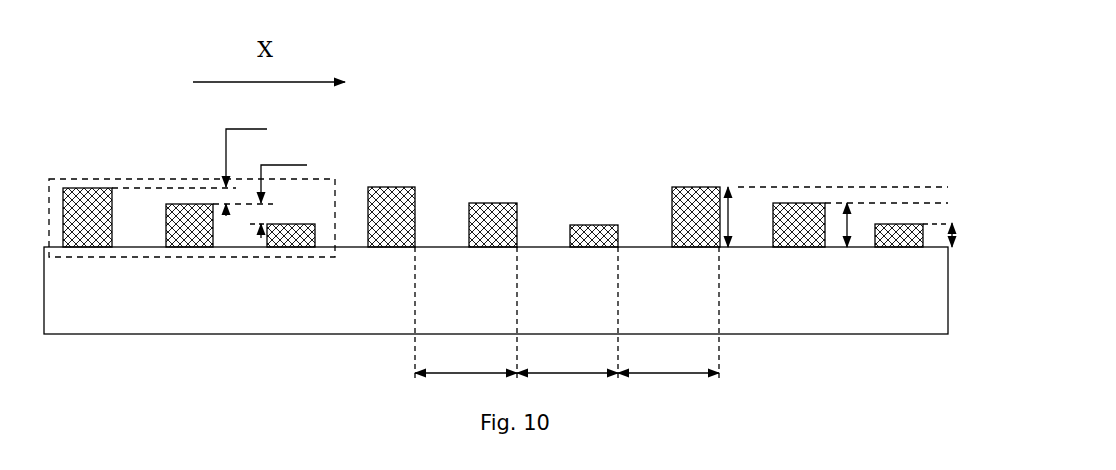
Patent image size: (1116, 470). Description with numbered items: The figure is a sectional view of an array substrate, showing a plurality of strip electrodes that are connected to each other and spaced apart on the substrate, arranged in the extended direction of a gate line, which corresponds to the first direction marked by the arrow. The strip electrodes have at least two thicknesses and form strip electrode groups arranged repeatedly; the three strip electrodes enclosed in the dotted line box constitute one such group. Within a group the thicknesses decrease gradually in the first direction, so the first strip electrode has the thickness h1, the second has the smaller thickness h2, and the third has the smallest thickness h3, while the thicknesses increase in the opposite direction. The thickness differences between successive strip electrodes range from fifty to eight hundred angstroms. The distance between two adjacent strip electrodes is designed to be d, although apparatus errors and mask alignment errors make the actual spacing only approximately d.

The thickness of first strip electrode h1 is at (491, 176).
The thickness of second strip electrode h2 is at (566, 194).
The thickness of third strip electrode h3 is at (937, 236).
The distance between adjacent strip electrodes d is at (567, 314).